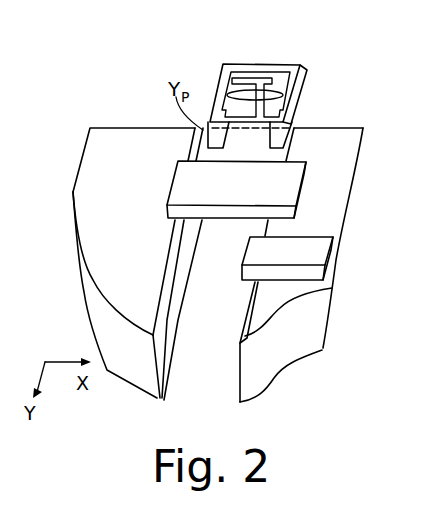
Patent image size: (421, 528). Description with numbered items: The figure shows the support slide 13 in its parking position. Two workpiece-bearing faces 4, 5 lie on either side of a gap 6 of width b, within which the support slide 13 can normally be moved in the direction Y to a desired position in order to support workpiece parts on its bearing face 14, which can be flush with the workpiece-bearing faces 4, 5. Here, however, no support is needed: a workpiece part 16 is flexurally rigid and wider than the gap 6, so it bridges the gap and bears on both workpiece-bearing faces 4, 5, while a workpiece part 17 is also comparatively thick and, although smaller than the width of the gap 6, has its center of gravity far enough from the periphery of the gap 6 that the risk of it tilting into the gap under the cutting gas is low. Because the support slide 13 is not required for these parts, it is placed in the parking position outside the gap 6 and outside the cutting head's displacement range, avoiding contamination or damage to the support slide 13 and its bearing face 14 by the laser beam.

The workpiece-bearing face 4 is at (135, 148).
The workpiece-bearing face 5 is at (338, 172).
The gap 6 is at (222, 283).
The support slide 13 is at (205, 67).
The bearing face 14 is at (279, 80).
The workpiece part 16 is at (188, 188).
The workpiece part 17 is at (310, 253).